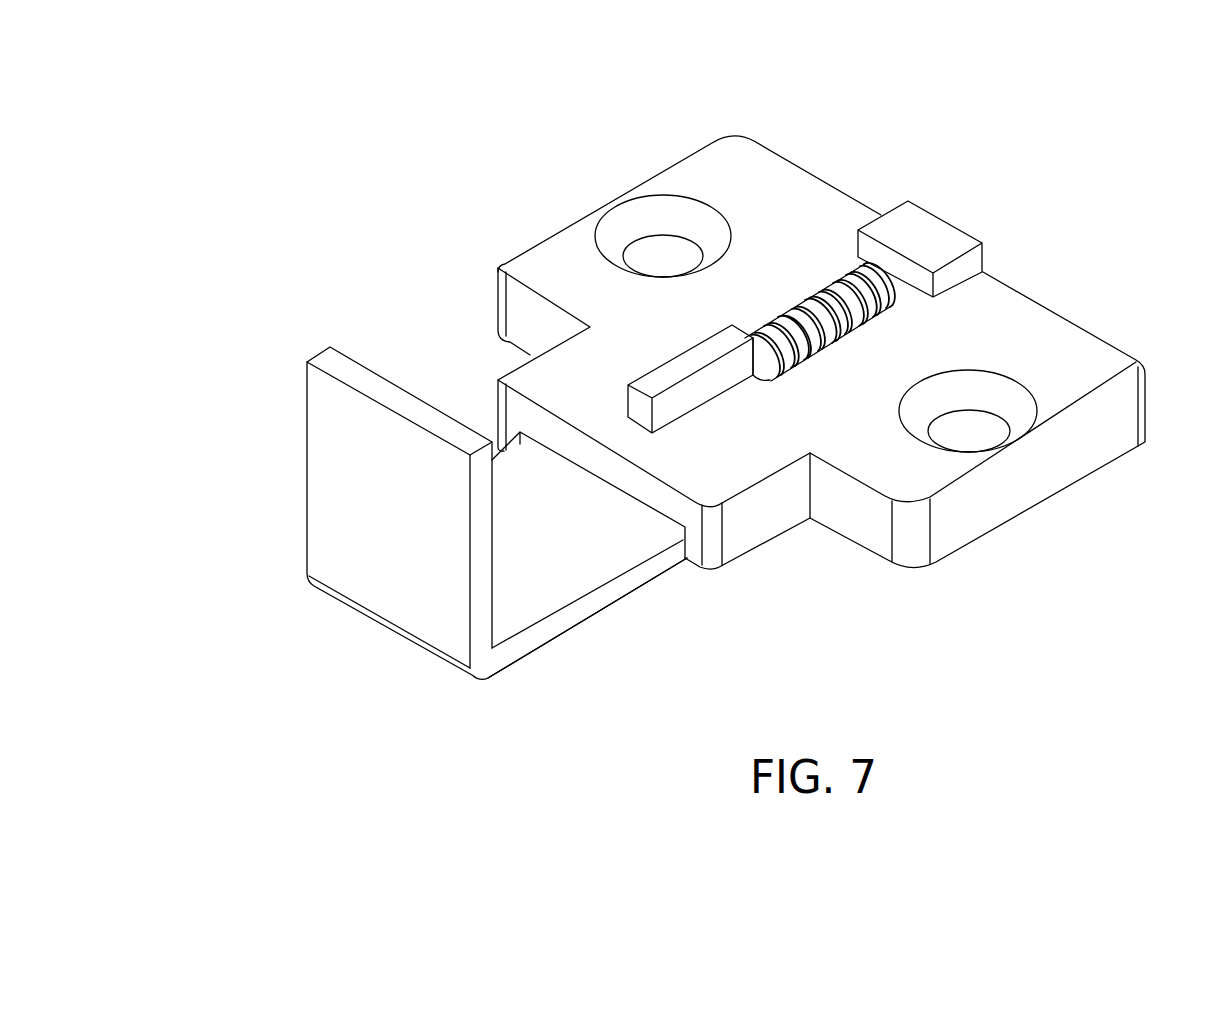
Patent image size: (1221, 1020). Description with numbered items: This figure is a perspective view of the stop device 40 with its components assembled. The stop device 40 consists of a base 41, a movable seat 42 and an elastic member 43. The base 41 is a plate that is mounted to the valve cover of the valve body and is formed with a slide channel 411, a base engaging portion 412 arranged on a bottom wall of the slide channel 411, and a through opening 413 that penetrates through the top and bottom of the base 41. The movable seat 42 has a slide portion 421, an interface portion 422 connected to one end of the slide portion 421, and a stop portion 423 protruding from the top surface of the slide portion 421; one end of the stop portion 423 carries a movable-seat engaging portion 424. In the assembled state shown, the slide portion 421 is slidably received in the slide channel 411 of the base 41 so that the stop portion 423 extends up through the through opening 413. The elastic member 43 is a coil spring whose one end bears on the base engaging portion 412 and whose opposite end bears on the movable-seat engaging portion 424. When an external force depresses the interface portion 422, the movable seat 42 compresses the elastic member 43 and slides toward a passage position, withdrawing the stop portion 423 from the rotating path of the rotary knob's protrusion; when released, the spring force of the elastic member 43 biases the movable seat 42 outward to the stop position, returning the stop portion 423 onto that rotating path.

The stop device 40 is at (687, 420).
The base 41 is at (832, 430).
The slide channel 411 is at (677, 555).
The base engaging portion 412 is at (893, 283).
The through opening 413 is at (845, 325).
The movable seat 42 is at (508, 485).
The slide portion 421 is at (545, 635).
The interface portion 422 is at (325, 452).
The stop portion 423 is at (628, 420).
The movable-seat engaging portion 424 is at (770, 381).
The elastic member 43 is at (832, 294).